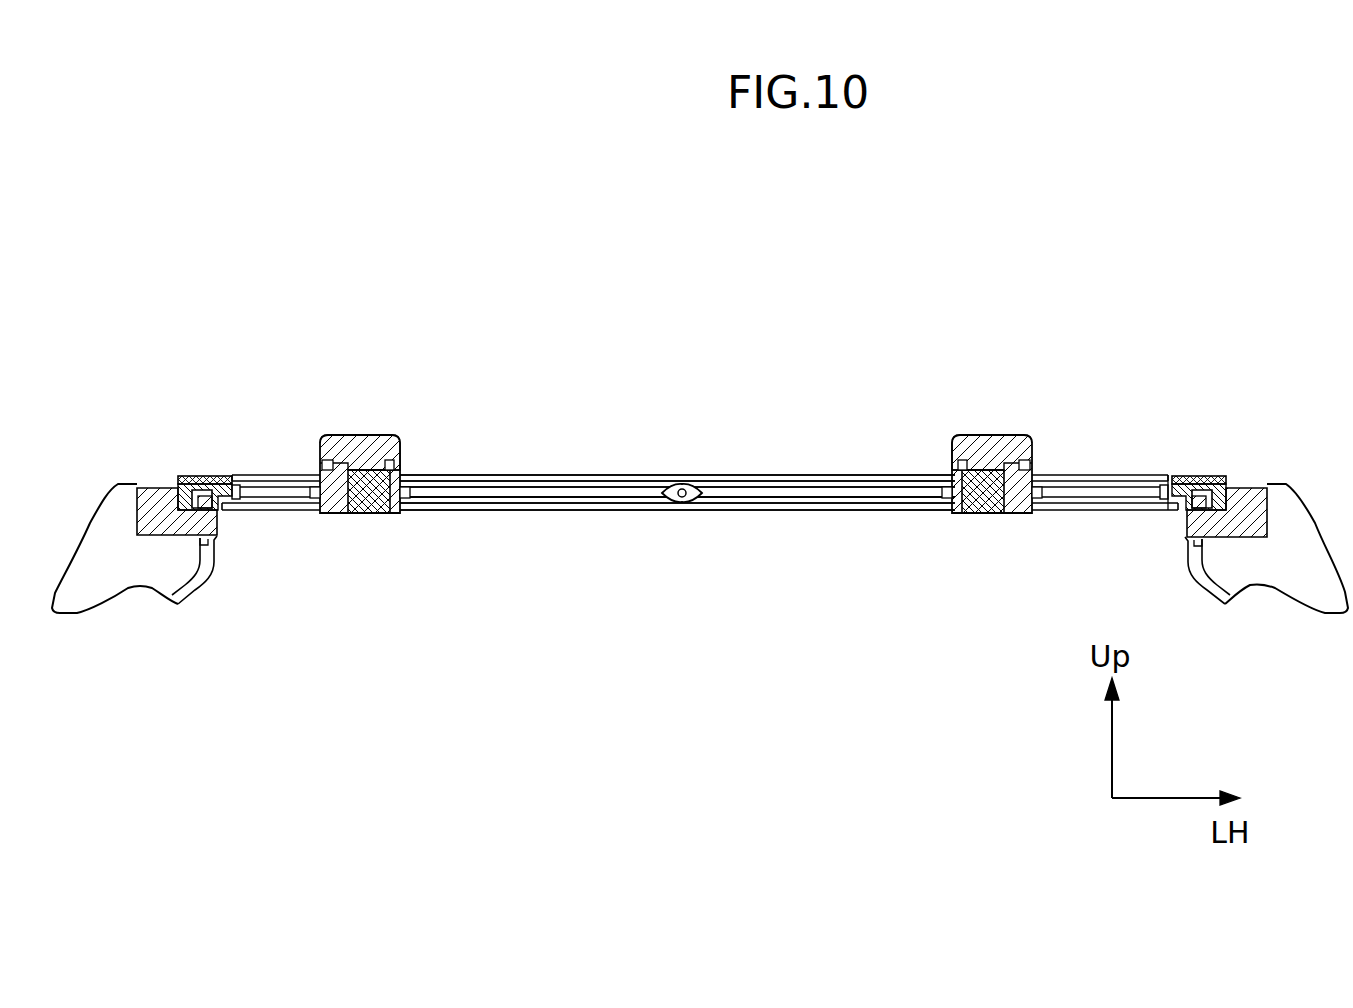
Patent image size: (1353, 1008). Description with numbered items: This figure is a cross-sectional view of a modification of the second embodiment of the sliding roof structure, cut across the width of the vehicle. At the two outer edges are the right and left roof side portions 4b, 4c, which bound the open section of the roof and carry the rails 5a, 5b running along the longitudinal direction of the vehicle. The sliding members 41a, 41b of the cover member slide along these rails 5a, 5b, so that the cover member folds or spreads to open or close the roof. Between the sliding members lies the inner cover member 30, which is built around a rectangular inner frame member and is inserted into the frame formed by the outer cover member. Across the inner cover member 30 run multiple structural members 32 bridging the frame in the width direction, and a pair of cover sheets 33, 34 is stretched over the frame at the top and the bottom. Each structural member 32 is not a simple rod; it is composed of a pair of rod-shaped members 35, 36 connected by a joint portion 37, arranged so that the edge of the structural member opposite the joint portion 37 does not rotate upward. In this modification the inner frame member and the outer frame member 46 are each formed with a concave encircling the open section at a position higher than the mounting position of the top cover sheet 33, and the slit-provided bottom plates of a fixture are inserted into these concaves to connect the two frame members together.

The roof side portion 4b is at (1290, 505).
The roof side portion 4c is at (115, 510).
The rail 5a is at (1250, 522).
The rail 5b is at (153, 522).
The inner cover member 30 is at (566, 450).
The structural member 32 is at (872, 466).
The cover sheet 33 is at (800, 478).
The cover sheet 34 is at (832, 510).
The rod-shaped member 35 is at (745, 494).
The rod-shaped member 36 is at (463, 486).
The joint portion 37 is at (683, 488).
The sliding member 41a is at (1208, 480).
The sliding member 41b is at (185, 478).
The outer frame member 46 is at (1022, 515).